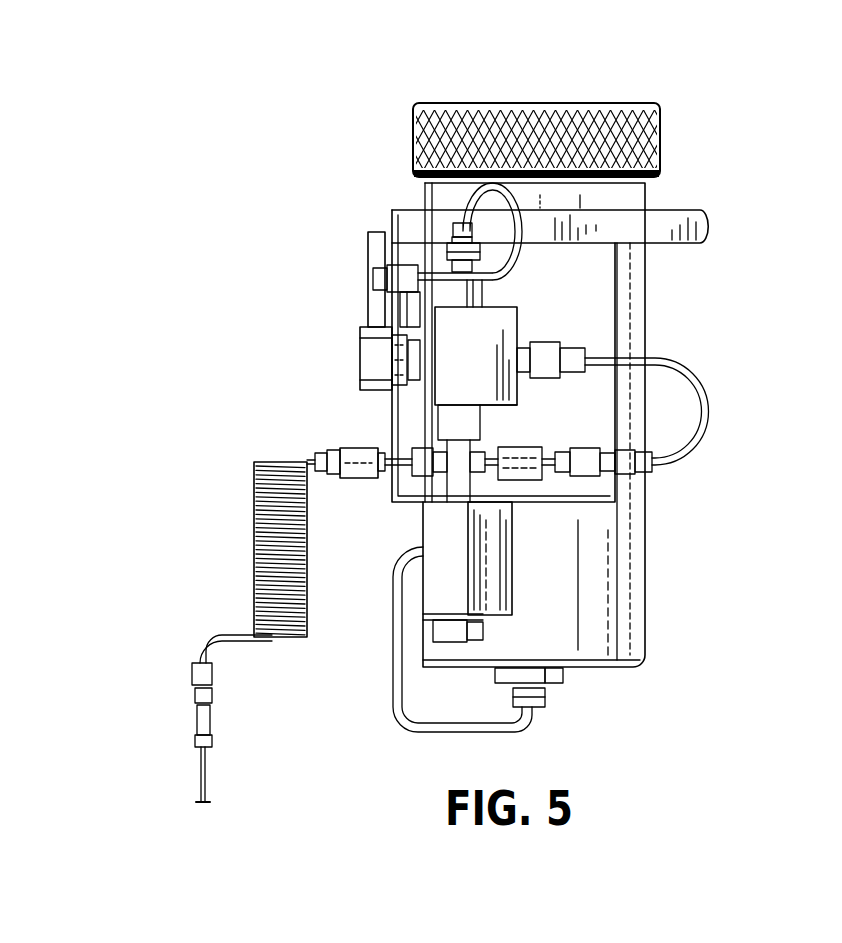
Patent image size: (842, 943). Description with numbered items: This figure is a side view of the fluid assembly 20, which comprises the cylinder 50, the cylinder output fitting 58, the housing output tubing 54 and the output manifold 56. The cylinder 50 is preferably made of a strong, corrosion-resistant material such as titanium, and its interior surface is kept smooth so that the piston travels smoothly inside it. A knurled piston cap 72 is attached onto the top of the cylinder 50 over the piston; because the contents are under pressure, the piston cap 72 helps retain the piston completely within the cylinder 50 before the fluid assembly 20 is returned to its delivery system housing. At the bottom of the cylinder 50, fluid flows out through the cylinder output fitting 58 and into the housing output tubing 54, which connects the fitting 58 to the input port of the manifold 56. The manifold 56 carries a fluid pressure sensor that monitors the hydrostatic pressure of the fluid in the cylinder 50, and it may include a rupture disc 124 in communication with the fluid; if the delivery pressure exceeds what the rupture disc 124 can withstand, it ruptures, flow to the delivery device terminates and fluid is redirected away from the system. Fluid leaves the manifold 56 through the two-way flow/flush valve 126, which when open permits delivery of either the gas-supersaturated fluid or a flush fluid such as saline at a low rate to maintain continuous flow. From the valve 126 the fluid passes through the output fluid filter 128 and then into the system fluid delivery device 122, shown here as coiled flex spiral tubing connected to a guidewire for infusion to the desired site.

The fluid assembly 20 is at (732, 204).
The cylinder 50 is at (643, 542).
The housing output tubing 54 is at (535, 722).
The output manifold 56 is at (345, 352).
The cylinder output fitting 58 is at (545, 697).
The piston cap 72 is at (647, 103).
The system fluid delivery device 122 is at (254, 522).
The rupture disc 124 is at (440, 643).
The two-way flow/flush valve 126 is at (373, 258).
The output fluid filter 128 is at (318, 455).